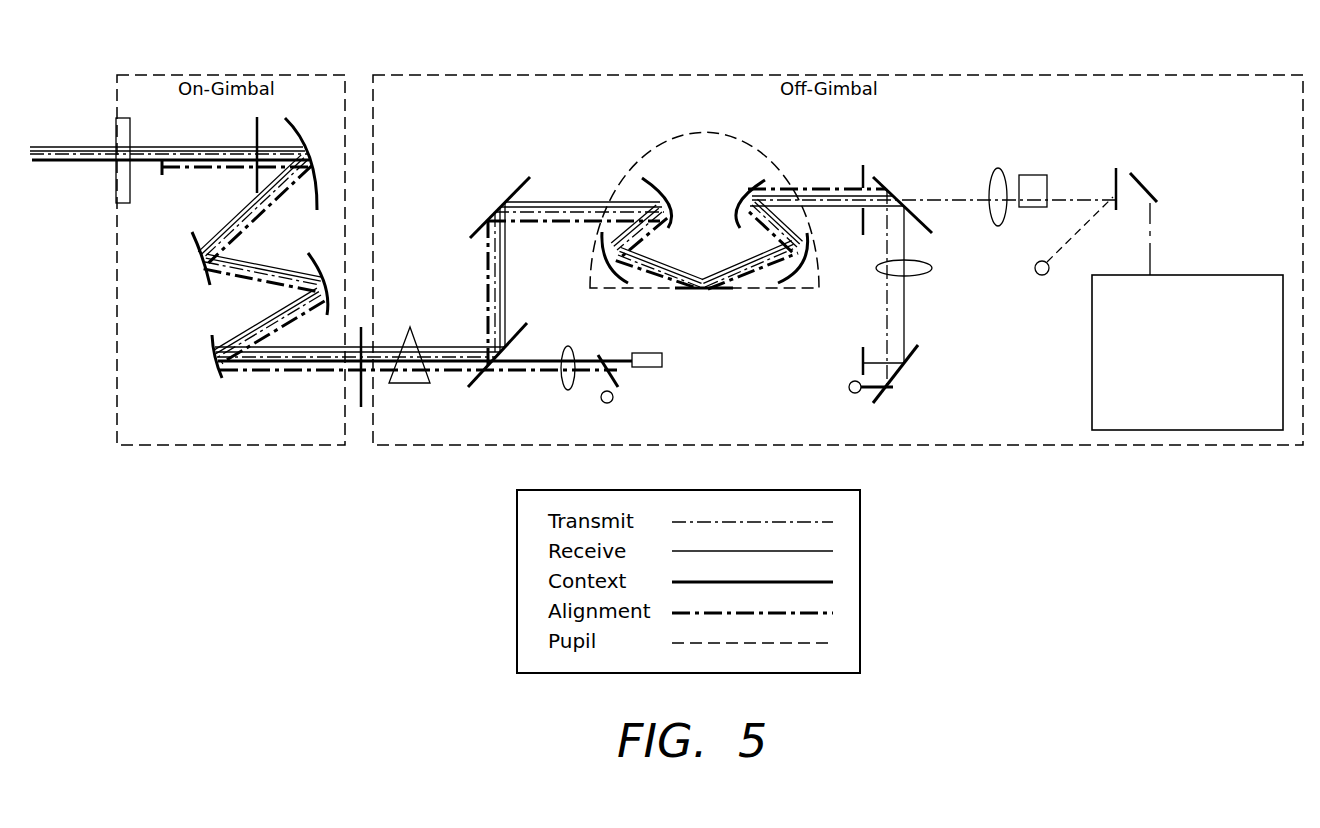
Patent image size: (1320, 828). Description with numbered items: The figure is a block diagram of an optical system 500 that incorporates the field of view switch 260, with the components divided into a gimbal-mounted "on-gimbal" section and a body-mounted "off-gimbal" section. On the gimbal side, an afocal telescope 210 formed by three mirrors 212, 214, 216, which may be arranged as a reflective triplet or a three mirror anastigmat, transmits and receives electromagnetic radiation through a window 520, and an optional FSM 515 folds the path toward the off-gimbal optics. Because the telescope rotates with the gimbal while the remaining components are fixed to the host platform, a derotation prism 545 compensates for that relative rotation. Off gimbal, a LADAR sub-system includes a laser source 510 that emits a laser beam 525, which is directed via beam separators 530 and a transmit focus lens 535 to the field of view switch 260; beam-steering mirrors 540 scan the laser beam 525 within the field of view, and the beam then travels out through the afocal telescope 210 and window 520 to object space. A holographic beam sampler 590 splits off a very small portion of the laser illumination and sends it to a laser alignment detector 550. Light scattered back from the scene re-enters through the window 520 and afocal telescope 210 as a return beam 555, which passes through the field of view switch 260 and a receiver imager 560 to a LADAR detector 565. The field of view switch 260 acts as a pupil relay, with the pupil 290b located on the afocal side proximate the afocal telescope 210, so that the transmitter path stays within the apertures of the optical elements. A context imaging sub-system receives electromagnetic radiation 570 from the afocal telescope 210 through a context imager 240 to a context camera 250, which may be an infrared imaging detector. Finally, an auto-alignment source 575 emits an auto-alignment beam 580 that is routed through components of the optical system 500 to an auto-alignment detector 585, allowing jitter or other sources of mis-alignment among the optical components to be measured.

The optical system 500 is at (1177, 37).
The laser source 510 is at (1092, 396).
The FSM 515 is at (212, 366).
The window 520 is at (124, 118).
The laser beam 525 is at (1152, 246).
The beam separators 530 is at (1042, 176).
The transmit focus lens 535 is at (998, 170).
The beam-steering mirrors 540 is at (515, 193).
The derotation prism 545 is at (412, 337).
The laser alignment detector 550 is at (1037, 273).
The return beam 555 is at (118, 143).
The receiver imager 560 is at (932, 262).
The LADAR detector 565 is at (863, 348).
The electromagnetic radiation 570 is at (117, 160).
The auto-alignment source 575 is at (858, 394).
The auto-alignment beam 580 is at (885, 320).
The auto-alignment detector 585 is at (612, 402).
The holographic beam sampler 590 is at (1126, 174).
The afocal telescope 210 is at (180, 278).
The mirror 212 is at (290, 118).
The mirror 214 is at (203, 252).
The mirror 216 is at (325, 253).
The context imager 240 is at (567, 390).
The context camera 250 is at (653, 352).
The field of view switch 260 is at (684, 304).
The pupil 290b is at (860, 168).